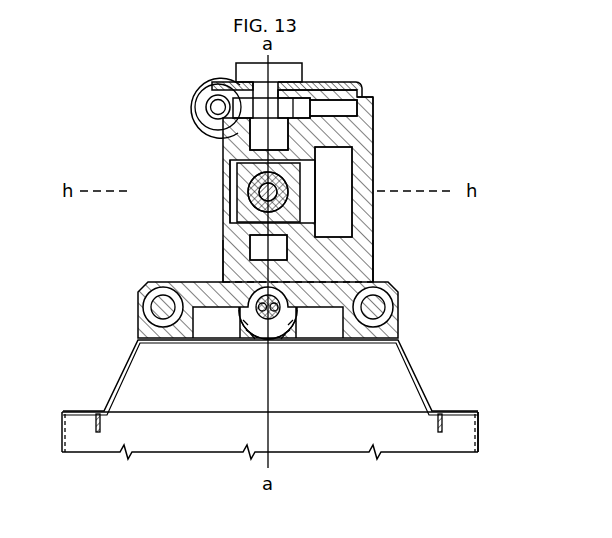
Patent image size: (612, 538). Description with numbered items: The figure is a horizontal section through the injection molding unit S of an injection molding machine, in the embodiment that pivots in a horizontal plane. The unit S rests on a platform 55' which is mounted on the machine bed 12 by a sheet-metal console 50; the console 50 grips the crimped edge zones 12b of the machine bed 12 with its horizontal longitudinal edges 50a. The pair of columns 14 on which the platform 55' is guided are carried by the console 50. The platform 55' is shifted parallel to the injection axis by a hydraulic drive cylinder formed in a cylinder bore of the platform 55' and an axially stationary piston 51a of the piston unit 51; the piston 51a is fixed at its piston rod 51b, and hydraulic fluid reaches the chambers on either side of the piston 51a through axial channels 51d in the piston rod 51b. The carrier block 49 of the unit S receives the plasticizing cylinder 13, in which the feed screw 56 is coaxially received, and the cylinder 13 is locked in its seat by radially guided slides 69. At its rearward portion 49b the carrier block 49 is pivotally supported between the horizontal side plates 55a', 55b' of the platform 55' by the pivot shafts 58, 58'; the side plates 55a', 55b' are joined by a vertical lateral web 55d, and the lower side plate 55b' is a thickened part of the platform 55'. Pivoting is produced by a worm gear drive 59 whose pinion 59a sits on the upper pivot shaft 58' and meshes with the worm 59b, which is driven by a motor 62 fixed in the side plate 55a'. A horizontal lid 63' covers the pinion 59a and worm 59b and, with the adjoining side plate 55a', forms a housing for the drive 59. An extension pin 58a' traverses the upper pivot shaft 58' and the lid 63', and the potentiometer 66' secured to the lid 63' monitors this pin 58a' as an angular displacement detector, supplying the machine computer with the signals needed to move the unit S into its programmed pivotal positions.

The machine bed 12 is at (232, 448).
The crimped edge zones 12b is at (461, 416).
The plasticizing cylinder 13 is at (232, 193).
The columns 14 is at (150, 312).
The carrier block 49 is at (317, 205).
The rearward carrier block portion 49b is at (233, 215).
The console 50 is at (393, 368).
The horizontal longitudinal edges 50a is at (461, 411).
The central bolt 51 is at (244, 325).
The piston 51a is at (258, 335).
The piston rod 51b is at (278, 327).
The axial channels 51d is at (287, 310).
The platform 55' is at (245, 214).
The upper side plate 55a' is at (400, 125).
The lower side plate 55b' is at (346, 268).
The lateral web 55d is at (362, 237).
The feed screw 56 is at (320, 207).
The pivot shaft 58 is at (208, 247).
The upper pivot shaft 58' is at (209, 124).
The extension pin 58a' is at (191, 62).
The worm gear drive 59 is at (308, 91).
The pinion 59a is at (312, 103).
The worm 59b is at (208, 108).
The motor 62 is at (198, 90).
The horizontal lid 63' is at (332, 68).
The potentiometer 66' is at (248, 52).
The slides 69 is at (301, 161).
The injection molding unit S is at (487, 96).